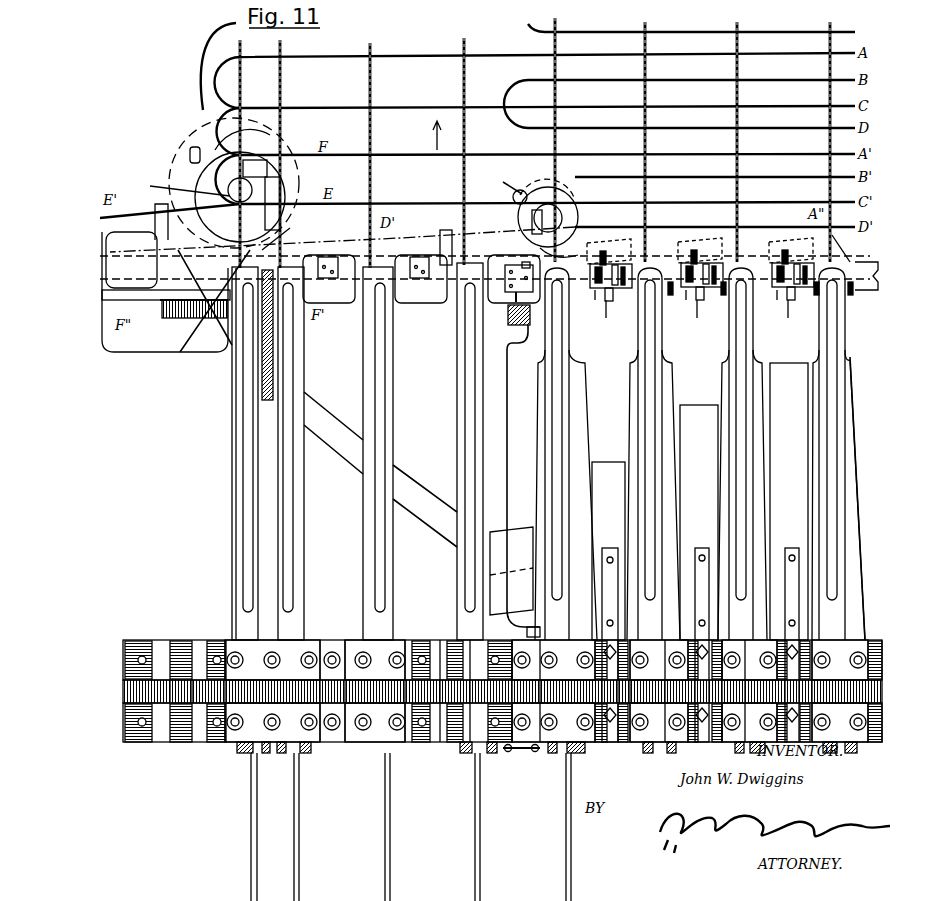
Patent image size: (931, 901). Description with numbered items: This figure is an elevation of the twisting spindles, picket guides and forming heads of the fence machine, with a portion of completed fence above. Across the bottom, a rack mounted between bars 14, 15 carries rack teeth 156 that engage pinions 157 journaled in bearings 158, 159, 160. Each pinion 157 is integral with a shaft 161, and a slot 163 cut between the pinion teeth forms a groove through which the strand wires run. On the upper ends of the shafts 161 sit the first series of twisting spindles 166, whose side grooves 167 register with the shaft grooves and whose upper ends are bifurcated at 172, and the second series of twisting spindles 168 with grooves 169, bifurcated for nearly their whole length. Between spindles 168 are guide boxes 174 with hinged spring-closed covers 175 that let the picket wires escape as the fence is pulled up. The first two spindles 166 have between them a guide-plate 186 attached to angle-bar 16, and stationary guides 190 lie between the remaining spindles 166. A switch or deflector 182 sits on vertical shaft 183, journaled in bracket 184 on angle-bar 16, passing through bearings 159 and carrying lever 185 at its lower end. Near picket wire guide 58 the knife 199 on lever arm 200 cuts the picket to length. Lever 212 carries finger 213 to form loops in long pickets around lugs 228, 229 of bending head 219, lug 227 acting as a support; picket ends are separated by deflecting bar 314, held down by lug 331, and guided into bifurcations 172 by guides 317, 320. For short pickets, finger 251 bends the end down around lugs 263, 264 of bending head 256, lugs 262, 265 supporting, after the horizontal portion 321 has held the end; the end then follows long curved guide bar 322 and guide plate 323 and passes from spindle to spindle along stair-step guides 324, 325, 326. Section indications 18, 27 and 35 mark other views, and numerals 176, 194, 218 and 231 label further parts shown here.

The bar 14 is at (136, 642).
The bar 15 is at (134, 744).
The angle-bar 16 is at (262, 879).
The section line 18- 18 is at (875, 593).
The section line 27- 27 is at (600, 222).
The section line 35- 35 is at (452, 265).
The picket wire guide 58 is at (866, 263).
The rack teeth 156 is at (128, 700).
The pinion 157 is at (212, 707).
The bearing 158 is at (232, 647).
The bearing 159 is at (570, 724).
The bearing 160 is at (700, 724).
The shaft 161 is at (250, 620).
The slot 163 is at (258, 754).
The twisting spindle 166 is at (233, 523).
The groove 167 is at (245, 473).
The twisting spindle 168 is at (586, 414).
The groove 169 is at (566, 340).
The bifurcation 172 is at (236, 370).
The guide box 174 is at (609, 300).
The hinged spring-closed cover 175 is at (608, 252).
The gripper finger 176 is at (596, 290).
The switch or deflector 182 is at (500, 262).
The vertical shaft 183 is at (527, 332).
The bracket 184 is at (508, 316).
The lever 185 is at (507, 753).
The guide-plate 186 is at (274, 330).
The stationary guide 190 is at (336, 262).
The wire clamp 194 is at (330, 303).
The knife 199 is at (852, 260).
The lever arm 200 is at (856, 350).
The lever 212 is at (205, 320).
The finger 213 is at (200, 306).
The hub 218 is at (228, 188).
The bending head 219 is at (282, 180).
The lug 227 is at (268, 162).
The lug 228 is at (215, 150).
The lug 229 is at (200, 193).
The link 231 is at (272, 250).
The finger 251 is at (513, 195).
The bending head 256 is at (572, 210).
The lug 262 is at (560, 202).
The lug 263 is at (526, 190).
The lug 264 is at (515, 260).
The lug 265 is at (566, 254).
The deflecting bar 314 is at (160, 210).
The guide 317 is at (152, 355).
The guide 320 is at (196, 362).
The horizontal portion of bracket 321 is at (438, 232).
The long curved guide bar 322 is at (400, 483).
The guide plate 323 is at (512, 530).
The guide 324 is at (606, 470).
The guide 325 is at (696, 412).
The guide 326 is at (787, 373).
The lug 331 is at (185, 150).